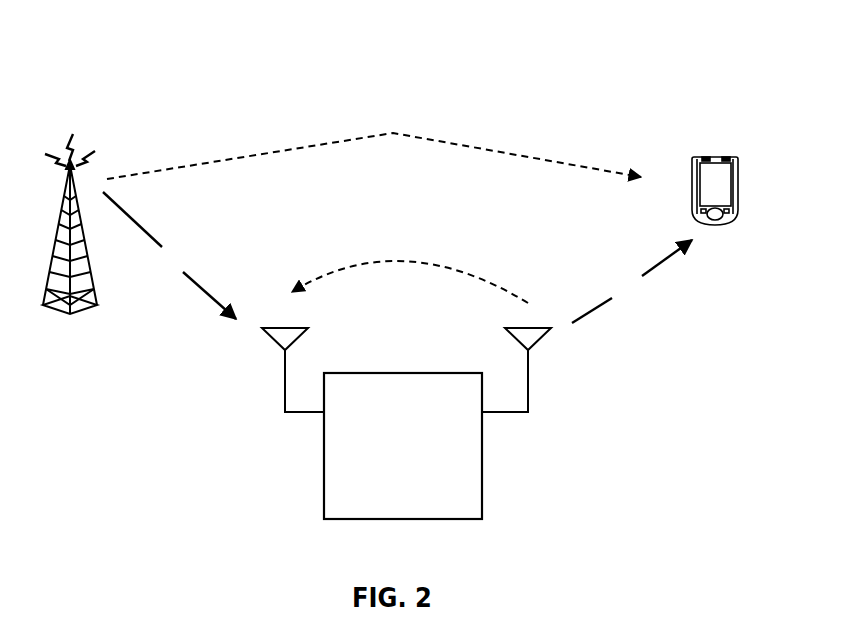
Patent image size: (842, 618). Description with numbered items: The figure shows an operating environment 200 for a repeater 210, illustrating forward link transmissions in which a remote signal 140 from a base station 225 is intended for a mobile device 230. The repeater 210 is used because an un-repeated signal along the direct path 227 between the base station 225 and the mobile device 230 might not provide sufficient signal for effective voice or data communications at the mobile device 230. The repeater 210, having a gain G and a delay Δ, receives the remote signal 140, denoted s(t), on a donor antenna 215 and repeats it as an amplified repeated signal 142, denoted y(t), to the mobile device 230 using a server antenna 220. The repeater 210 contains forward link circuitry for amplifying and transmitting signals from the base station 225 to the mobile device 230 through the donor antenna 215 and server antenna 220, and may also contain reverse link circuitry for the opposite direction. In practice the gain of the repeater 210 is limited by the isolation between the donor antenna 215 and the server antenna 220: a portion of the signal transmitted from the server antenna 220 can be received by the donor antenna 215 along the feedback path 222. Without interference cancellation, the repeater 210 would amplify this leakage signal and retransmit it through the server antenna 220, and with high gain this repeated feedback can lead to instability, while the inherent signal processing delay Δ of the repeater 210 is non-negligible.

The operating environment 200 is at (641, 64).
The base station 225 is at (78, 313).
The remote signal 140 is at (141, 227).
The donor antenna 215 is at (300, 337).
The server antenna 220 is at (512, 337).
The repeater 210 is at (420, 520).
The feedback path 222 is at (432, 264).
The path 227 is at (492, 151).
The repeated signal 142 is at (673, 251).
The mobile device 230 is at (708, 156).